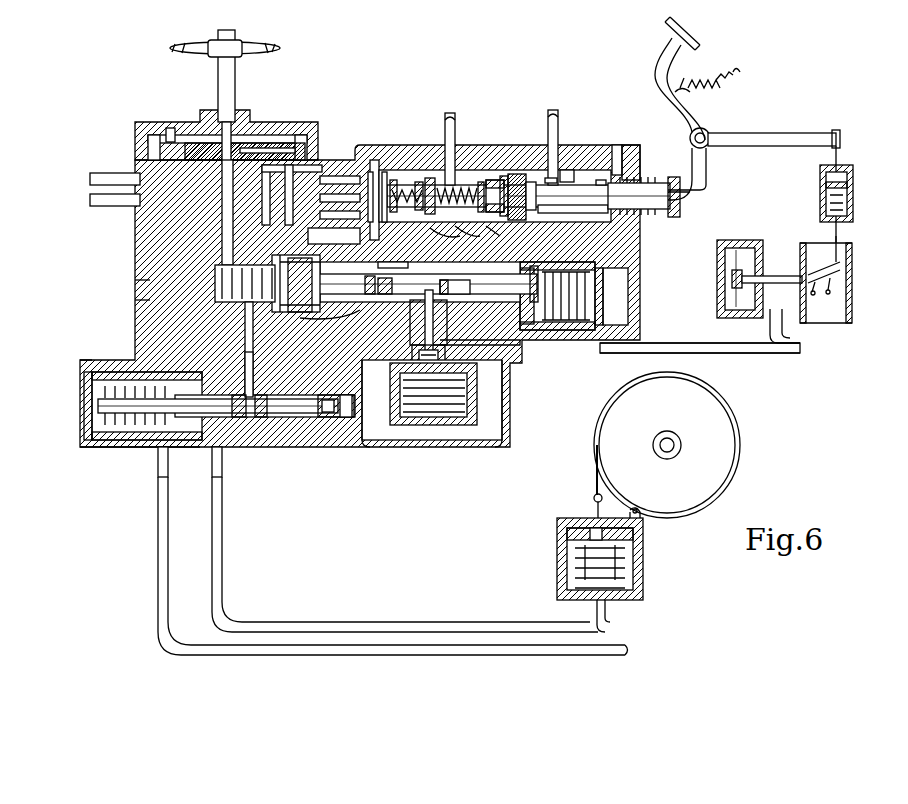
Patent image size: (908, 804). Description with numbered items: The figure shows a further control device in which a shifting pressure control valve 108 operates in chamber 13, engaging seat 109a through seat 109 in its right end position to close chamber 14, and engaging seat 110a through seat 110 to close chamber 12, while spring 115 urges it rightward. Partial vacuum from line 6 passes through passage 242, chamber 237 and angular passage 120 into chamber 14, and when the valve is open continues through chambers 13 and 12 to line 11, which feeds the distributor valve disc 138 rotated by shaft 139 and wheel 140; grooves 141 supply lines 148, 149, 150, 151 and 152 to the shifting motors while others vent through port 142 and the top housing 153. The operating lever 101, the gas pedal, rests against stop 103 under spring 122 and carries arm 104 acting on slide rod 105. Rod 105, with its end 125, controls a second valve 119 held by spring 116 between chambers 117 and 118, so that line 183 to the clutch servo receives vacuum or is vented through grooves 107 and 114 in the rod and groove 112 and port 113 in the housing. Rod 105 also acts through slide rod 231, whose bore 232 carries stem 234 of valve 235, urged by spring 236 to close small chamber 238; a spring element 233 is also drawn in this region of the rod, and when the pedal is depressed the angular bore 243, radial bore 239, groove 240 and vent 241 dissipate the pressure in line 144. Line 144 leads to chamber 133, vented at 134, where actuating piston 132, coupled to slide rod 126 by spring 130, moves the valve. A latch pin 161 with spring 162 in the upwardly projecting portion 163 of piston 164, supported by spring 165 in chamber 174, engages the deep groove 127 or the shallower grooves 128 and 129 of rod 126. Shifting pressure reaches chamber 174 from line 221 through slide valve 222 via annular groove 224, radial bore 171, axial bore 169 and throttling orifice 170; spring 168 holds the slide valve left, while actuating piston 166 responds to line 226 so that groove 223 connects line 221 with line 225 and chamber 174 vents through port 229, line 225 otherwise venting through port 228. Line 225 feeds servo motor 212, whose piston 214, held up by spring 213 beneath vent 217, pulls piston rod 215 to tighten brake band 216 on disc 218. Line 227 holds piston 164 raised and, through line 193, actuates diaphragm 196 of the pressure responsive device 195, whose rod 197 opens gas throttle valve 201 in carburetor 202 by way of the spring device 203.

The line 6 is at (451, 115).
The line 11 is at (160, 236).
The chamber 12 is at (210, 300).
The valve chamber 13 is at (307, 282).
The chamber 14 is at (370, 294).
The operating lever 101 is at (665, 78).
The stop 103 is at (691, 76).
The arm 104 is at (706, 180).
The slide rod 105 is at (640, 190).
The groove 107 is at (580, 222).
The shifting pressure control valve 108 is at (300, 312).
The seat 109 is at (345, 316).
The seat 109a is at (334, 239).
The seat 110 is at (250, 310).
The seat 110a is at (230, 302).
The groove 112 is at (634, 165).
The port 113 is at (617, 148).
The groove 114 is at (600, 180).
The spring 115 is at (215, 283).
The spring 116 is at (530, 182).
The chamber 117 is at (568, 172).
The chamber 118 is at (552, 178).
The second valve 119 is at (518, 174).
The angular passage 120 is at (350, 176).
The spring 122 is at (705, 92).
The end of rod 125 is at (560, 213).
The slide rod 126 is at (417, 282).
The deep groove 127 is at (455, 294).
The shallower groove 128 is at (388, 294).
The shallower groove 129 is at (522, 300).
The spring 130 is at (560, 322).
The actuating piston 132 is at (612, 262).
The chamber 133 is at (612, 306).
The vent 134 is at (628, 292).
The distributor valve disc 138 is at (250, 148).
The shaft 139 is at (234, 75).
The wheel 140 is at (276, 50).
The grooves 141 is at (290, 150).
The port 142 is at (150, 140).
The line 144 is at (399, 256).
The line 148 is at (105, 176).
The line 149 is at (105, 200).
The line 150 is at (222, 200).
The line 151 is at (266, 225).
The line 152 is at (292, 228).
The top housing 153 is at (170, 130).
The latch pin 161 is at (435, 328).
The spring 162 is at (412, 352).
The upwardly projecting portion 163 is at (412, 325).
The piston 164 is at (478, 394).
The spring 165 is at (440, 425).
The actuating piston 166 is at (88, 380).
The spring 168 is at (125, 447).
The axial bore 169 is at (330, 418).
The throttling orifice 170 is at (348, 418).
The radial bore 171 is at (226, 395).
The chamber 174 is at (380, 445).
The line 183 is at (554, 112).
The line 193 is at (785, 333).
The pressure responsive device 195 is at (700, 338).
The diaphragm 196 is at (733, 248).
The rod 197 is at (776, 276).
The gas throttle valve 201 is at (845, 262).
The carburetor 202 is at (852, 300).
The spring device 203 is at (853, 192).
The servo motor 212 is at (640, 578).
The spring 213 is at (570, 582).
The piston 214 is at (640, 545).
The piston rod 215 is at (594, 497).
The brake band 216 is at (597, 452).
The vent 217 is at (585, 525).
The disc 218 is at (718, 428).
The line 221 is at (255, 368).
The slide valve 222 is at (140, 408).
The groove 223 is at (204, 450).
The annular groove 224 is at (240, 418).
The line 225 is at (232, 573).
The line 226 is at (158, 566).
The vacuum pressure supply line 227 is at (628, 348).
The port 228 is at (180, 450).
The port 229 is at (262, 418).
The slide rod 231 is at (505, 176).
The bore 232 is at (494, 180).
The spring 233 is at (440, 185).
The stem 234 is at (428, 178).
The valve 235 is at (416, 185).
The spring 236 is at (383, 175).
The chamber 237 is at (369, 178).
The small chamber 238 is at (392, 180).
The radial bore 239 is at (452, 240).
The groove 240 is at (474, 246).
The vent 241 is at (507, 246).
The passage 242 is at (480, 182).
The angular bore 243 is at (395, 210).